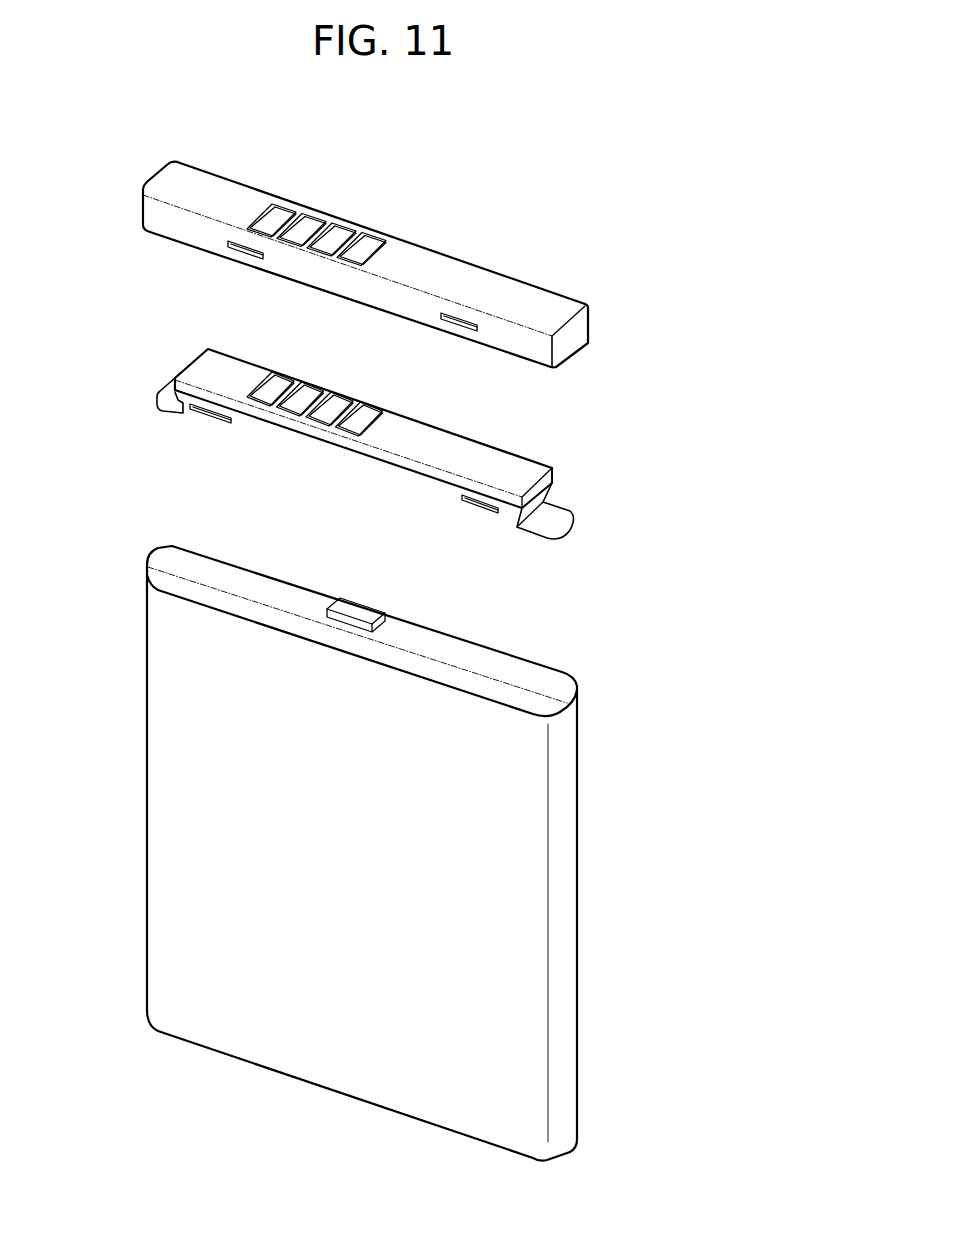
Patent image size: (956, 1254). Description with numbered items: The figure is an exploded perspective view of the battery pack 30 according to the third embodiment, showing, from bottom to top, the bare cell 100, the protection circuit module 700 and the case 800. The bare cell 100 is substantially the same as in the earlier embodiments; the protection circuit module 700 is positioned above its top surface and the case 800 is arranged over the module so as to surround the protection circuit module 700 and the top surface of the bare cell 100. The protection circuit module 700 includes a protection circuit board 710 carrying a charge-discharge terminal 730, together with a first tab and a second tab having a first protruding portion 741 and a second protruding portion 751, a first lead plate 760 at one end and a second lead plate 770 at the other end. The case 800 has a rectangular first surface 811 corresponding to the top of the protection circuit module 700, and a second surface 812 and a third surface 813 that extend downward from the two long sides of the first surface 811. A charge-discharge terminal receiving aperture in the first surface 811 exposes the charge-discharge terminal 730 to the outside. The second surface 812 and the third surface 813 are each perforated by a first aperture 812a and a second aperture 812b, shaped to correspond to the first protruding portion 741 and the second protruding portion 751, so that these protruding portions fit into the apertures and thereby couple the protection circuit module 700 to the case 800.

The battery pack 30 is at (88, 121).
The bare cell 100 is at (600, 690).
The protection circuit module 700 is at (568, 462).
The protection circuit board 710 is at (454, 445).
The charge-discharge terminal 730 is at (360, 417).
The first protruding portion 741 is at (468, 508).
The second protruding portion 751 is at (215, 418).
The first lead plate 760 is at (576, 519).
The second lead plate 770 is at (160, 393).
The case 800 is at (601, 297).
The first surface 811 is at (404, 262).
The second surface 812 is at (362, 284).
The first aperture 812a is at (477, 317).
The second aperture 812b is at (249, 249).
The third surface 813 is at (475, 262).